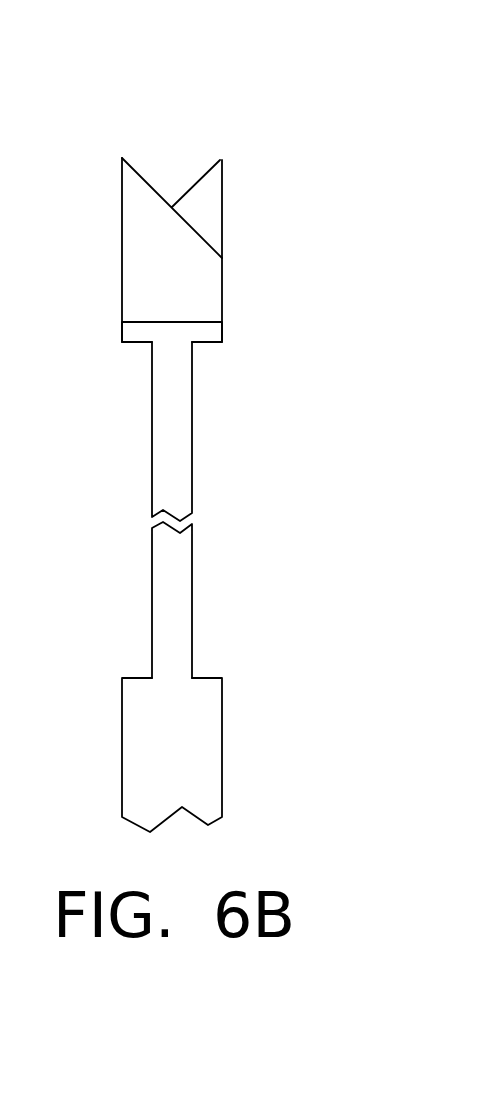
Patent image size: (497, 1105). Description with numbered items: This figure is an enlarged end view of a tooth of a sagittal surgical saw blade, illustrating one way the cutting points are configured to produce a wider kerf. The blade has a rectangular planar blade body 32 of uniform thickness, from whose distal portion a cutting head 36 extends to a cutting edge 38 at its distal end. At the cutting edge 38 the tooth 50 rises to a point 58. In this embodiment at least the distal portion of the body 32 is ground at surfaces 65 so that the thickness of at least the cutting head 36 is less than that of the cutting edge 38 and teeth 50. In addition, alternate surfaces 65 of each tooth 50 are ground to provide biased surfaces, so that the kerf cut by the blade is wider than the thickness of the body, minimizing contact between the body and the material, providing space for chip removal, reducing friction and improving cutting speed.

The planar blade body 32 is at (222, 732).
The cutting head 36 is at (192, 495).
The cutting edge 38 is at (222, 328).
The tooth 50 is at (122, 243).
The point 58 is at (220, 160).
The ground surfaces 65 is at (195, 181).